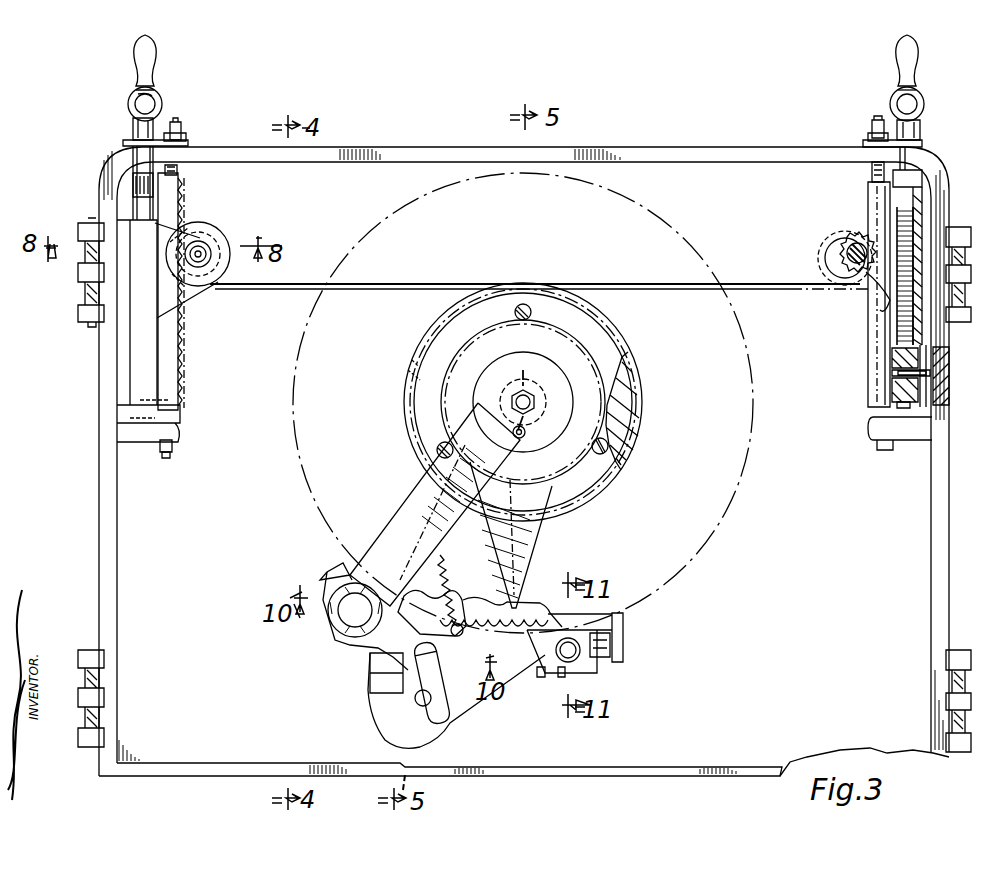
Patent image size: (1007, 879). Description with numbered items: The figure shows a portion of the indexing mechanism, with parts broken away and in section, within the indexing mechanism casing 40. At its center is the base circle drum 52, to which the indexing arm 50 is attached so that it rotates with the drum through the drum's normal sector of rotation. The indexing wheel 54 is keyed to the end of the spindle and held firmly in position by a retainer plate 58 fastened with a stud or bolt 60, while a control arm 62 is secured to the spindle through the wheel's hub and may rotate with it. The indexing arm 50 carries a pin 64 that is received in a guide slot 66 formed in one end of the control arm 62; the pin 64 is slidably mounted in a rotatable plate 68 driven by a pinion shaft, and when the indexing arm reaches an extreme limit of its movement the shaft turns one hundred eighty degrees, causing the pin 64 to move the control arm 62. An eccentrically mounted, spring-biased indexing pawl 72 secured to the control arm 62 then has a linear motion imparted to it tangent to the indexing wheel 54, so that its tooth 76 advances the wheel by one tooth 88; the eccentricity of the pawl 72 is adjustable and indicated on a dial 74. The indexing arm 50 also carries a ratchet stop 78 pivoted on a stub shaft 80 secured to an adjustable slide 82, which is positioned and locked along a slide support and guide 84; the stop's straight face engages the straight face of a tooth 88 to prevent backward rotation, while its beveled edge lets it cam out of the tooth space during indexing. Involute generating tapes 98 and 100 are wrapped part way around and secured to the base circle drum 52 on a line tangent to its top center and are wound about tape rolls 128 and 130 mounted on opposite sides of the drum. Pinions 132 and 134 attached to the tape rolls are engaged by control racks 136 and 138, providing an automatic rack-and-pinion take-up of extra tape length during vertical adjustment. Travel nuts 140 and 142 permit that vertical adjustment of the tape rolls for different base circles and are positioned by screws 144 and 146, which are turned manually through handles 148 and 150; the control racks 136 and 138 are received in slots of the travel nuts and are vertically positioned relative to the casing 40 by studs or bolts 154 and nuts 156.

The indexing mechanism casing 40 is at (657, 152).
The indexing arm 50 is at (522, 534).
The base circle drum 52 is at (620, 442).
The indexing wheel 54 is at (508, 608).
The retainer plate 58 is at (518, 440).
The stud or bolt 60 is at (530, 404).
The control arm 62 is at (428, 500).
The pin 64 is at (420, 700).
The guide slot 66 is at (440, 675).
The rotatable plate 68 is at (390, 678).
The indexing pawl 72 is at (452, 634).
The dial 74 is at (345, 627).
The tooth 76 is at (458, 612).
The ratchet stop 78 is at (540, 672).
The stub shaft 80 is at (568, 662).
The adjustable slide 82 is at (600, 660).
The slide support and guide 84 is at (622, 640).
The tooth 88 is at (537, 667).
The involute generating tape 98 is at (338, 290).
The involute generating tape 100 is at (660, 290).
The tape roll 128 is at (208, 232).
The tape roll 130 is at (830, 262).
The pinion 132 is at (213, 287).
The pinion 134 is at (850, 240).
The control rack 136 is at (181, 392).
The control rack 138 is at (876, 198).
The travel nut 140 is at (132, 356).
The travel nut 142 is at (915, 234).
The screw 144 is at (138, 198).
The screw 146 is at (908, 202).
The handle 148 is at (130, 95).
The handle 150 is at (915, 93).
The studs or bolts 154 is at (174, 124).
The nuts 156 is at (184, 141).